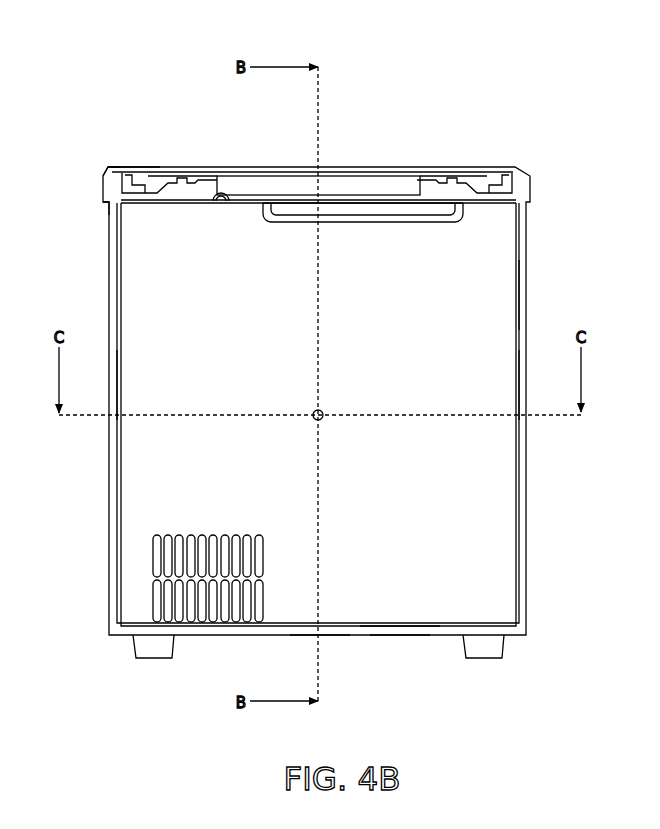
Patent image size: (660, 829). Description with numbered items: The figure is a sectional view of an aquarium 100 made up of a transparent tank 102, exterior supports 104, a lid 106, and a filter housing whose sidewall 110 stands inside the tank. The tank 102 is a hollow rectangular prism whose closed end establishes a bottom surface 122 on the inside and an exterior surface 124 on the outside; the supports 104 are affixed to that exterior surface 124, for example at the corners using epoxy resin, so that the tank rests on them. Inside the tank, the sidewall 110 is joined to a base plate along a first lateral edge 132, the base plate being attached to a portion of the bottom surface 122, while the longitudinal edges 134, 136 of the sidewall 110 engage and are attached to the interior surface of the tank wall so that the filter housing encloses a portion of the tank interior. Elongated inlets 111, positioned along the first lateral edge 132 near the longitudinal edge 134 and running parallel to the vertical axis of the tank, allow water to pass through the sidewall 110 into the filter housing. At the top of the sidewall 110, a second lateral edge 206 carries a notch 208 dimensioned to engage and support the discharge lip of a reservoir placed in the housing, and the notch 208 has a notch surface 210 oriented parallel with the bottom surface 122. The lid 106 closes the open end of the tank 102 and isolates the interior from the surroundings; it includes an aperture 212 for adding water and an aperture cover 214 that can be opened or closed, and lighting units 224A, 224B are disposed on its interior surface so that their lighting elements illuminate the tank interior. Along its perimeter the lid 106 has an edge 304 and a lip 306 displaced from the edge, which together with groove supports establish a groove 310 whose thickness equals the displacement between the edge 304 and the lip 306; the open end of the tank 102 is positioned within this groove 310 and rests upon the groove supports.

The aquarium 100 is at (385, 82).
The tank 102 is at (108, 545).
The exterior supports 104 is at (158, 658).
The lid 106 is at (547, 183).
The sidewall 110 is at (500, 295).
The inlets 111 is at (237, 528).
The bottom surface 122 is at (318, 624).
The exterior surface 124 is at (400, 635).
The first lateral edge 132 is at (398, 615).
The longitudinal edge 134 is at (120, 384).
The longitudinal edge 136 is at (515, 388).
The second lateral edge 206 is at (247, 204).
The notch 208 is at (438, 222).
The notch surface 210 is at (307, 214).
The aperture 212 is at (427, 174).
The aperture cover 214 is at (365, 175).
The lighting unit 224A is at (160, 172).
The lighting unit 224B is at (487, 175).
The edge 304 is at (103, 197).
The lip 306 is at (128, 170).
The groove 310 is at (108, 168).